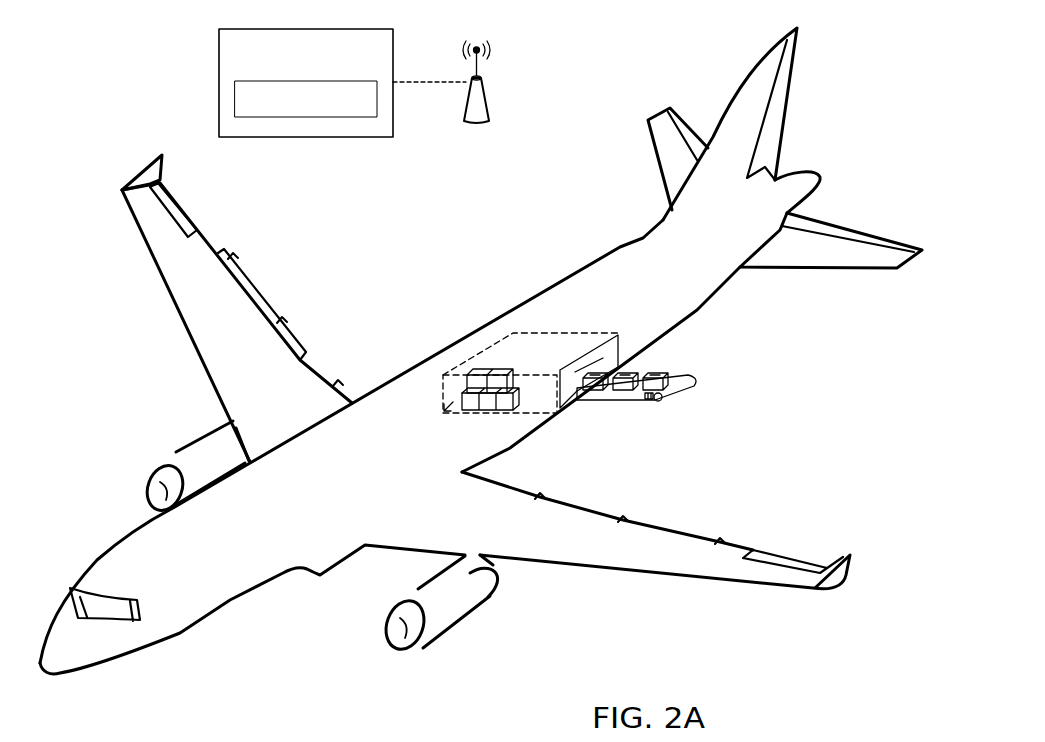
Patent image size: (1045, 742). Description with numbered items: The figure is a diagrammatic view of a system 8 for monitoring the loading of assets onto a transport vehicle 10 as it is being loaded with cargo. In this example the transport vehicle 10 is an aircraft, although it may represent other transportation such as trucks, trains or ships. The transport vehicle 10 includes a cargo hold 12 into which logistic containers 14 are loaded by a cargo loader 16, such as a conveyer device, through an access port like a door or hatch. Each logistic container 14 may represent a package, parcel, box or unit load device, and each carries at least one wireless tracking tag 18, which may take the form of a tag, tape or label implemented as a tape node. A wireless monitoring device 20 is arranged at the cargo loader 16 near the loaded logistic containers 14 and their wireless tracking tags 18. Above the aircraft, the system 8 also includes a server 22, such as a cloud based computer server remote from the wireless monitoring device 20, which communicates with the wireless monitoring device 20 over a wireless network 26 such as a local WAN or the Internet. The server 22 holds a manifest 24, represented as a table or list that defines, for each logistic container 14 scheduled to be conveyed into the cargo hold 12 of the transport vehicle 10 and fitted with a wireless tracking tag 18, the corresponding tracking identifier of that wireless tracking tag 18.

The system 8 is at (895, 28).
The transport vehicle 10 is at (237, 588).
The cargo hold 12 is at (560, 335).
The logistic container 14 is at (668, 376).
The cargo loader 16 is at (675, 388).
The wireless tracking tag 18 is at (662, 372).
The wireless monitoring device 20 is at (645, 395).
The server 22 is at (327, 63).
The manifest 24 is at (365, 109).
The wireless network 26 is at (487, 88).